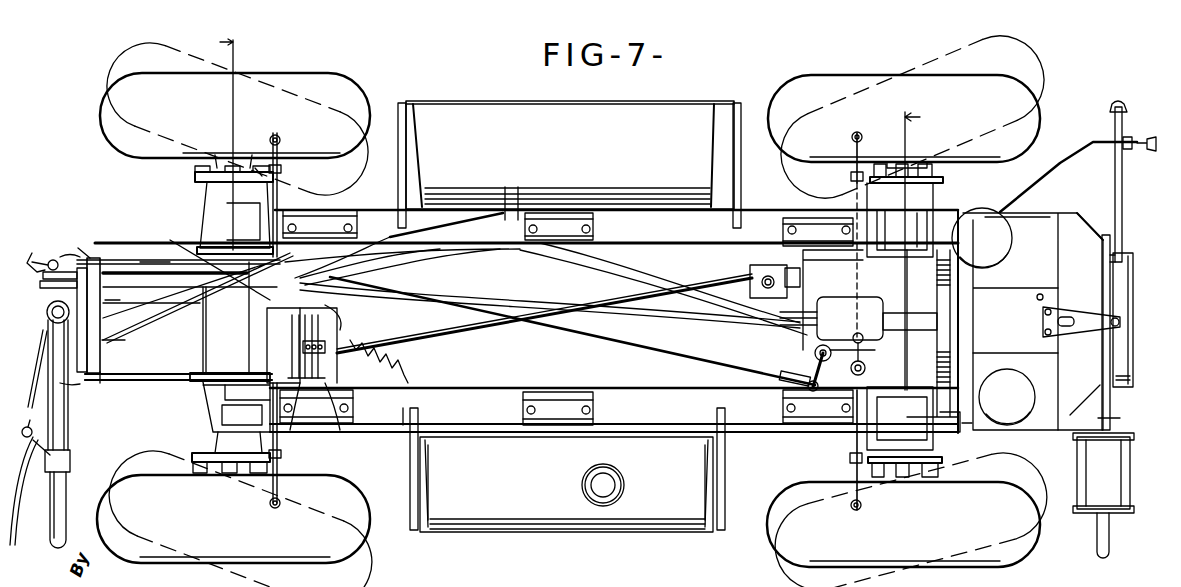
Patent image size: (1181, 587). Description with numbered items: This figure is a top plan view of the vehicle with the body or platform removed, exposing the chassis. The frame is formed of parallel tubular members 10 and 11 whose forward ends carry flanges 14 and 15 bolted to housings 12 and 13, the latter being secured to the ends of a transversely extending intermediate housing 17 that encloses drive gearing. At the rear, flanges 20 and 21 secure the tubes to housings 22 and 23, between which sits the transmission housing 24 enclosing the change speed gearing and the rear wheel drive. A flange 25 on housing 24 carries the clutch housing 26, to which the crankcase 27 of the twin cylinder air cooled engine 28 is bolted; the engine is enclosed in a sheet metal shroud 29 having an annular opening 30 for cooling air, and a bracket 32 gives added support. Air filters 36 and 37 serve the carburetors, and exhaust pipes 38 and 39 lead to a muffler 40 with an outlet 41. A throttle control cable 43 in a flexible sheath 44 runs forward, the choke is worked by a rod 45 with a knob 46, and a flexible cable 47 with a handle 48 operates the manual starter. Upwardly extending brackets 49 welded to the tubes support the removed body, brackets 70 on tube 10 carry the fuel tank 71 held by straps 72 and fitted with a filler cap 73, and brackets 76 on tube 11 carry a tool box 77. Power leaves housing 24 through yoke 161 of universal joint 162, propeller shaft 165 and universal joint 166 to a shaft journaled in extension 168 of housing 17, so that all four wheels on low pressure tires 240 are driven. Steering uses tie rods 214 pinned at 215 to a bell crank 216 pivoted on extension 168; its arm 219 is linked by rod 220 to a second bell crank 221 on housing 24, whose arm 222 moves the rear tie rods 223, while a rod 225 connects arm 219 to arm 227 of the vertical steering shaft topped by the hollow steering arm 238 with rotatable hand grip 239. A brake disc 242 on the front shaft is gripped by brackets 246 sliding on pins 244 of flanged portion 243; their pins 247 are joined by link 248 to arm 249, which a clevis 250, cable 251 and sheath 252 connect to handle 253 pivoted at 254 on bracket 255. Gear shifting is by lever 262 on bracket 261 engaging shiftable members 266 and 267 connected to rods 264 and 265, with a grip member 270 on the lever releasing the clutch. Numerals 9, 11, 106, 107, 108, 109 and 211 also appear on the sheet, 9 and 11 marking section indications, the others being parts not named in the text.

The section line 9 is at (938, 270).
The tubular frame member 10 is at (402, 428).
The tubular frame member 11 is at (377, 213).
The housing 12 is at (215, 415).
The housing 13 is at (217, 194).
The flange 14 is at (267, 410).
The flange 15 is at (280, 198).
The intermediate housing 17 is at (173, 374).
The flange 20 is at (850, 437).
The flange 21 is at (853, 204).
The housing 22 is at (927, 447).
The housing 23 is at (893, 205).
The transmission housing 24 is at (937, 338).
The flange 25 is at (982, 238).
The clutch housing 26 is at (973, 282).
The crankcase 27 is at (980, 307).
The engine 28 is at (1043, 224).
The shroud 29 is at (1080, 221).
The annular opening 30 is at (1141, 381).
The bracket 32 is at (1088, 306).
The air filter 36 is at (1027, 423).
The air filter 37 is at (982, 215).
The exhaust pipe 38 is at (1117, 419).
The exhaust pipe 39 is at (1125, 250).
The muffler 40 is at (1078, 467).
The outlet 41 is at (1097, 535).
The throttle control cable 43 is at (512, 213).
The flexible sheath 44 is at (497, 203).
The choke control rod 45 is at (1093, 142).
The knob 46 is at (1156, 138).
The flexible cable 47 is at (1122, 172).
The manipulating handle 48 is at (1120, 102).
The brackets 49 is at (333, 220).
The brackets 70 is at (412, 490).
The fuel supply tank 71 is at (490, 528).
The metal straps 72 is at (428, 498).
The filler cap 73 is at (615, 487).
The brackets 76 is at (397, 108).
The tool box 77 is at (577, 113).
The cross member 106 is at (137, 382).
The front channel 107 is at (95, 265).
The brace 108 is at (190, 254).
The brace end 109 is at (117, 305).
The yoke 161 is at (793, 263).
The universal joint assembly 162 is at (750, 272).
The propeller shaft 165 is at (520, 333).
The universal joint 166 is at (338, 365).
The extension 168 is at (280, 328).
The pipe 211 is at (490, 250).
The tie rods 214 is at (280, 166).
The pin 215 is at (348, 318).
The bell crank 216 is at (268, 311).
The arm 219 is at (399, 245).
The rod 220 is at (683, 358).
The second bell crank 221 is at (817, 368).
The arm 222 is at (868, 363).
The tie rods 223 is at (851, 172).
The rod 225 is at (100, 352).
The arm 227 is at (100, 343).
The steering arm 238 is at (63, 388).
The hand grip 239 is at (63, 530).
The tires 240 is at (300, 74).
The brake disc 242 is at (345, 423).
The flanged portion 243 is at (290, 357).
The stationary pins 244 is at (340, 338).
The brackets 246 is at (307, 421).
The pin 247 is at (290, 343).
The link 248 is at (550, 291).
The arm 249 is at (550, 301).
The clevis 250 is at (402, 266).
The cable 251 is at (370, 263).
The sheath 252 is at (140, 265).
The actuating handle 253 is at (100, 507).
The pivot 254 is at (63, 430).
The bracket 255 is at (63, 450).
The bracket 261 is at (82, 247).
The lever 262 is at (60, 257).
The rod 264 is at (568, 300).
The rod 265 is at (668, 295).
The shiftable member 266 is at (47, 328).
The shiftable member 267 is at (42, 280).
The grip member 270 is at (30, 262).